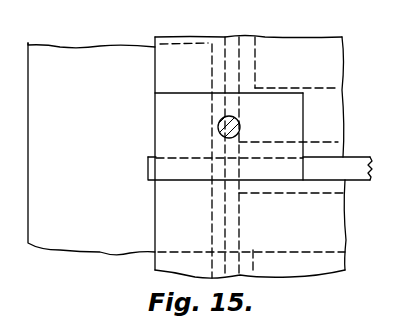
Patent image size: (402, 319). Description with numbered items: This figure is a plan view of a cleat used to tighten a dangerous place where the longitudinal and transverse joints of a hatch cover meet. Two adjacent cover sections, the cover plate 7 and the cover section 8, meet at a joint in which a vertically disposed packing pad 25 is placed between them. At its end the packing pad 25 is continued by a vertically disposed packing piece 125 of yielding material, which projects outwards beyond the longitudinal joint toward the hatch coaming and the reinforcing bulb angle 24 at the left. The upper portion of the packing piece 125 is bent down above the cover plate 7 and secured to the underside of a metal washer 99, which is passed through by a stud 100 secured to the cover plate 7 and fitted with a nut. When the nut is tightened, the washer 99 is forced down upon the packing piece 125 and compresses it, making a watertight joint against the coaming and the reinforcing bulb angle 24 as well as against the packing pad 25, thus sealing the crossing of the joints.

The reinforcing bulb angle 24 is at (89, 63).
The cover plate 7 is at (327, 58).
The metal washer 99 is at (288, 125).
The stud 100 is at (218, 125).
The packing piece 125 is at (148, 164).
The packing pad 25 is at (348, 171).
The cover section 8 is at (327, 237).